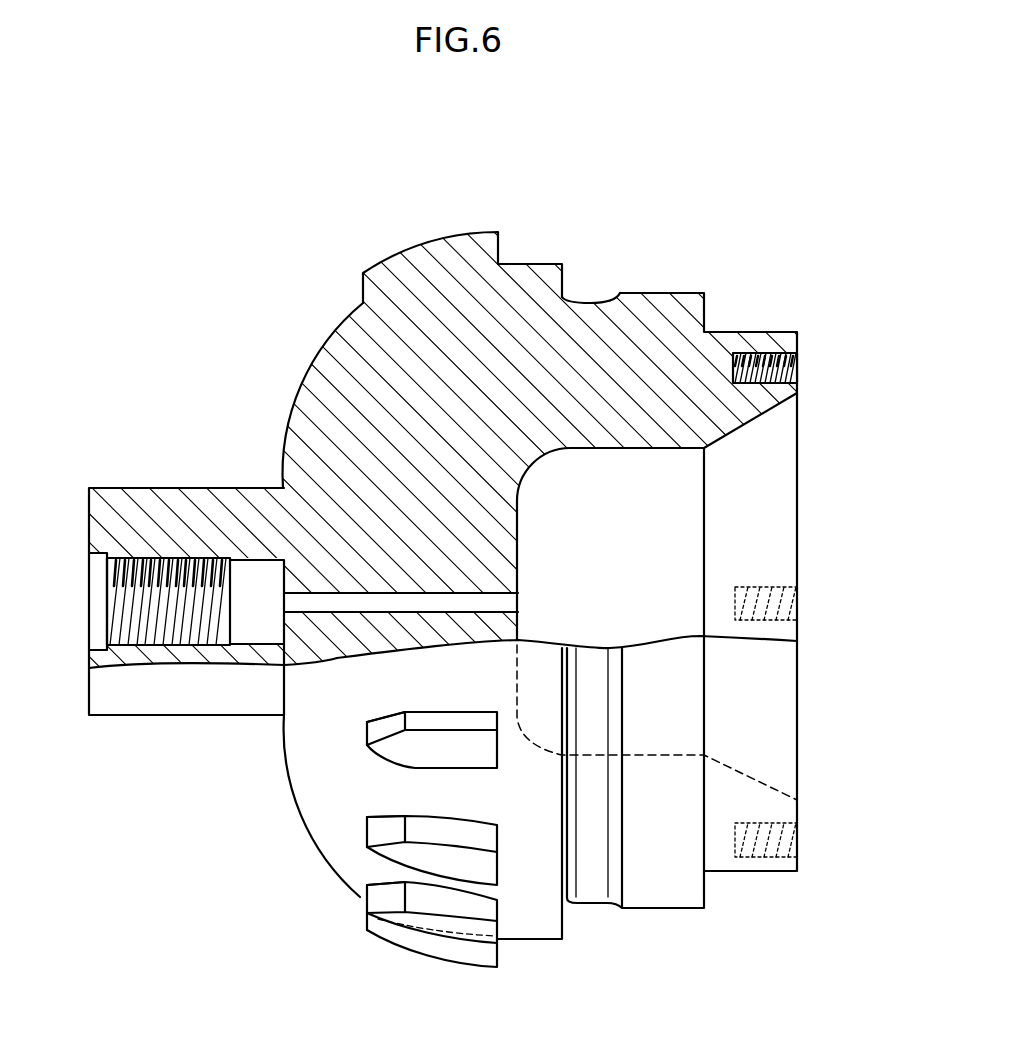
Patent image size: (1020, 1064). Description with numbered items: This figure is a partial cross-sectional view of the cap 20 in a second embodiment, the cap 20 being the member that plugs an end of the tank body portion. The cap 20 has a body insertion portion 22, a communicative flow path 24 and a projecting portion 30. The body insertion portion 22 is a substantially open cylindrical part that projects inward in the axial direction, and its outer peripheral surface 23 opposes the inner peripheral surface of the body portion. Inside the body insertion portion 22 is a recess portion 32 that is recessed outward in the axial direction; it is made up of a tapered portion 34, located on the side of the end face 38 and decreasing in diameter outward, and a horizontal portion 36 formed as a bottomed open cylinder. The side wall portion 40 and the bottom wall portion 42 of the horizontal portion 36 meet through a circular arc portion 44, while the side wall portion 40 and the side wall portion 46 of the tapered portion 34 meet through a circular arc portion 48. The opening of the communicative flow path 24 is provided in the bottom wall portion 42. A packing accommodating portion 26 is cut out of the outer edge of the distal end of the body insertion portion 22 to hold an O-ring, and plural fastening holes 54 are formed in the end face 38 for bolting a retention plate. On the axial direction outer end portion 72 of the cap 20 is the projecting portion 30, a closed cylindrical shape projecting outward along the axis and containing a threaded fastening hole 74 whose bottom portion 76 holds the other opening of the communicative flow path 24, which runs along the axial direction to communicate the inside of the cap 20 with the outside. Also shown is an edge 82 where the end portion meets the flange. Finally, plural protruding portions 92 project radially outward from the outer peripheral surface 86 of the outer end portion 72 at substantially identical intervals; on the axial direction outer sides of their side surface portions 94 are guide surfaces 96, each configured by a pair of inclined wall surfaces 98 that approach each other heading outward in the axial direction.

The cap 20 is at (400, 210).
The body insertion portion 22 is at (683, 275).
The outer peripheral surface 23 is at (650, 291).
The communicative flow path 24 is at (520, 604).
The packing accommodating portion 26 is at (752, 874).
The projecting portion 30 is at (116, 488).
The recess portion 32 is at (664, 583).
The tapered portion 34 is at (752, 428).
The horizontal portion 36 is at (601, 452).
The end face 38 is at (800, 394).
The side wall portion 40 is at (645, 452).
The bottom wall portion 42 is at (522, 556).
The circular arc portion 44 is at (532, 470).
The side wall portion 46 is at (725, 441).
The circular arc portion 48 is at (704, 452).
The fastening holes 54 is at (800, 366).
The axial direction outer end portion 72 is at (294, 403).
The fastening hole 74 is at (130, 642).
The bottom portion 76 is at (276, 578).
The transition edge 82 is at (263, 488).
The outer peripheral surface 86 is at (521, 942).
The protruding portions 92 is at (487, 236).
The side surface portions 94 is at (452, 722).
The guide surfaces 96 is at (365, 731).
The inclined wall surfaces 98 is at (390, 724).